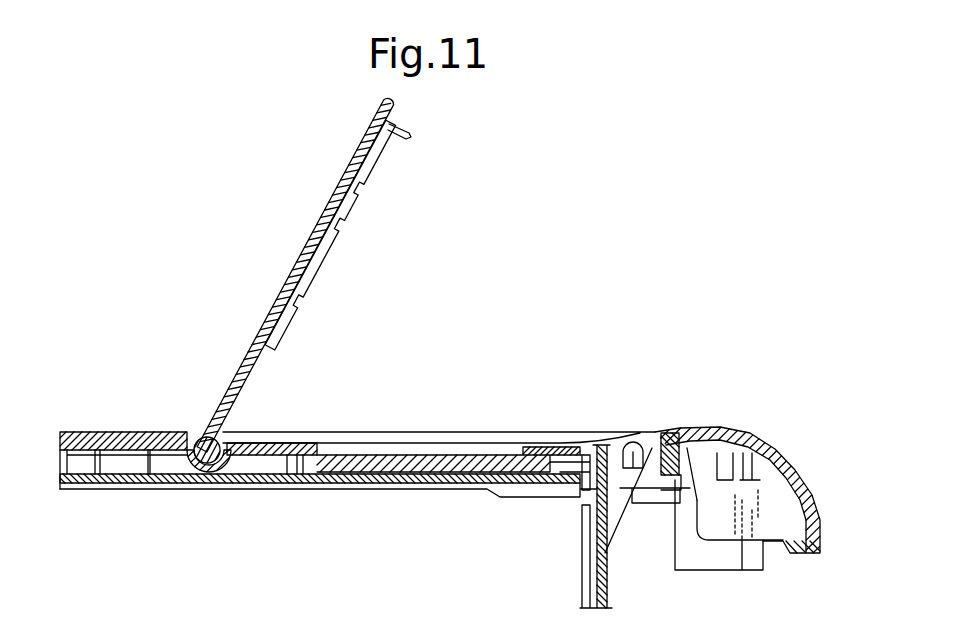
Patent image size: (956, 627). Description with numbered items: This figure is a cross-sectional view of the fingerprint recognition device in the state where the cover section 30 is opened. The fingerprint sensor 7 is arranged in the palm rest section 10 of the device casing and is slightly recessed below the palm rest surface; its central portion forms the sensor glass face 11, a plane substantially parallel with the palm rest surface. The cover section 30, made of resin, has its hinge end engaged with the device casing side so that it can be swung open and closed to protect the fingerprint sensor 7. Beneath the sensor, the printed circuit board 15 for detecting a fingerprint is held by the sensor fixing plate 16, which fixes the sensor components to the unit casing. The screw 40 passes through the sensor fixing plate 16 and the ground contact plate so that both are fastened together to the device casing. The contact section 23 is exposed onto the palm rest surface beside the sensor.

The fingerprint sensor 7 is at (428, 435).
The palm rest section 10 is at (112, 432).
The sensor glass face 11 is at (403, 470).
The printed circuit board 15 is at (338, 483).
The sensor fixing plate 16 is at (268, 487).
The contact section 23 is at (637, 443).
The cover section 30 is at (305, 233).
The screw 40 is at (650, 512).